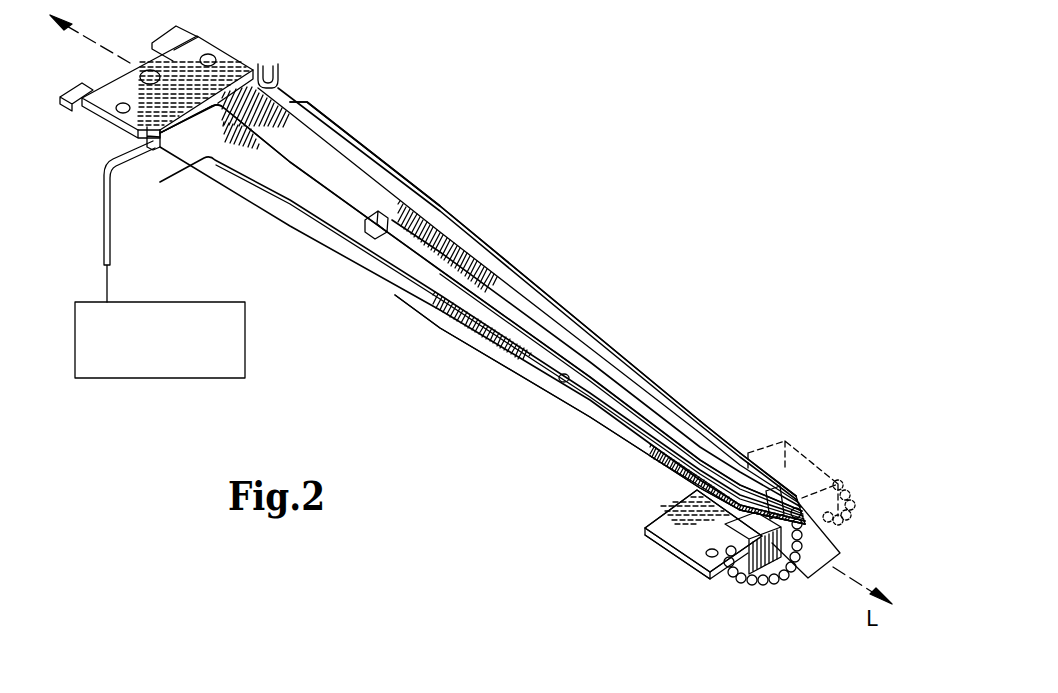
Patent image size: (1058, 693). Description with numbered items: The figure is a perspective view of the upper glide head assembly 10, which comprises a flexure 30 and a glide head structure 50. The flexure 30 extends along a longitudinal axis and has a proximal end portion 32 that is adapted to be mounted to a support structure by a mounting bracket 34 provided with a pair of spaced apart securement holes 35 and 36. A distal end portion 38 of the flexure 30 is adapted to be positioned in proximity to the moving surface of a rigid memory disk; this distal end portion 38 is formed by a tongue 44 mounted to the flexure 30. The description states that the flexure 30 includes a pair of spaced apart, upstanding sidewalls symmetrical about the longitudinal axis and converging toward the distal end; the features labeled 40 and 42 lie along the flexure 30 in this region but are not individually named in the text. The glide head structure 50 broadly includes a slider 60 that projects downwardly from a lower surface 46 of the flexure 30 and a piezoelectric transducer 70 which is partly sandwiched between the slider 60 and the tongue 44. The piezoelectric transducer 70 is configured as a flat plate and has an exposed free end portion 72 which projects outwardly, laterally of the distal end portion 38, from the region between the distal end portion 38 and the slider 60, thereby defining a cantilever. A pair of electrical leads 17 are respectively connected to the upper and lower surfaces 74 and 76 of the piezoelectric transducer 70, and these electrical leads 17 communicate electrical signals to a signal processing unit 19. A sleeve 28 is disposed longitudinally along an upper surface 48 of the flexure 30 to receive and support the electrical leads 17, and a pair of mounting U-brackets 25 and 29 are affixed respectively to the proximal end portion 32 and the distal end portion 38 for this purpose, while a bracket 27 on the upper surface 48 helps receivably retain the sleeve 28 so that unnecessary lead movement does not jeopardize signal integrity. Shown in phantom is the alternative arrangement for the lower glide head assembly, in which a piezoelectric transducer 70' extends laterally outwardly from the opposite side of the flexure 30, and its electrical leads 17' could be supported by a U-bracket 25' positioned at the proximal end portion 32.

The upper glide head assembly 10 is at (572, 212).
The electrical leads 17 is at (763, 600).
The electrical leads 17' is at (836, 477).
The signal processing unit 19 is at (130, 378).
The mounting U-bracket 25 is at (181, 174).
The U-bracket 25' is at (324, 62).
The bracket 27 is at (392, 220).
The sleeve 28 is at (315, 165).
The mounting U-bracket 29 is at (777, 490).
The flexure 30 is at (413, 267).
The proximal end portion 32 is at (307, 202).
The mounting bracket 34 is at (117, 87).
The securement hole 35 is at (100, 120).
The securement hole 36 is at (214, 55).
The distal end portion 38 is at (660, 390).
The strip 40 is at (518, 358).
The upper strip 42 is at (547, 293).
The tongue 44 is at (810, 548).
The lower surface 46 is at (660, 458).
The upper surface 48 is at (565, 384).
The glide head structure 50 is at (534, 501).
The slider 60 is at (745, 562).
The piezoelectric transducer 70 is at (668, 562).
The piezoelectric transducer 70' is at (796, 455).
The exposed free end portion 72 is at (658, 540).
The upper surface 74 is at (687, 518).
The lower surface 76 is at (703, 566).